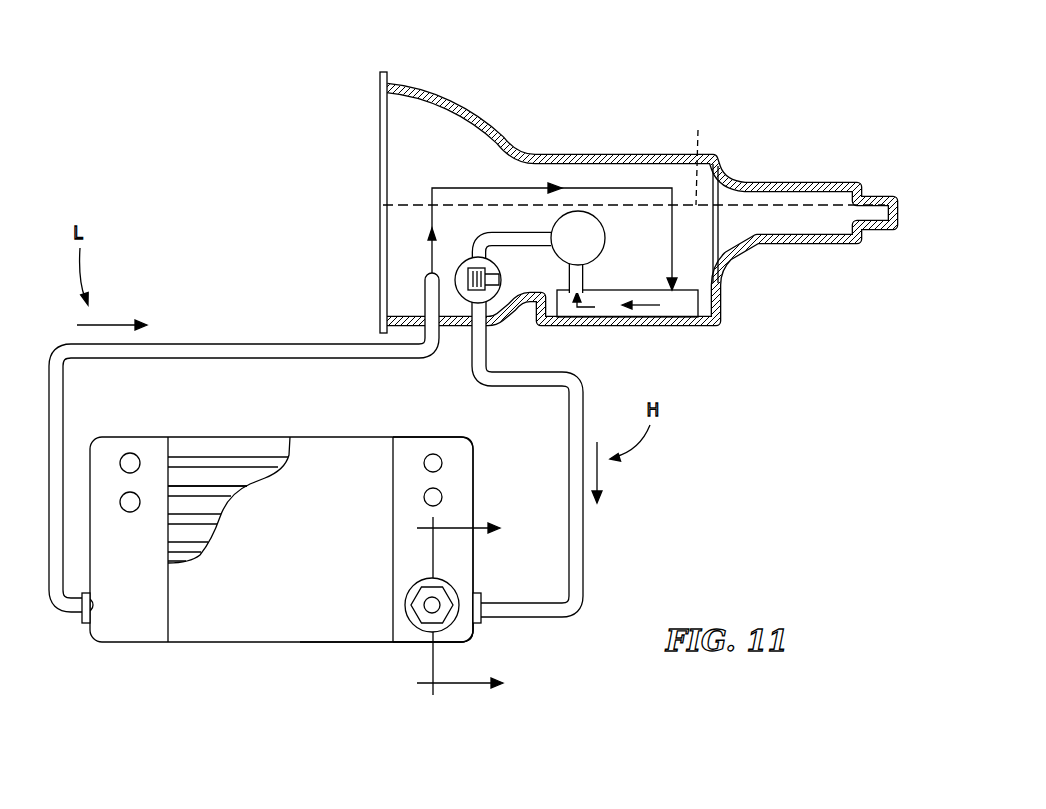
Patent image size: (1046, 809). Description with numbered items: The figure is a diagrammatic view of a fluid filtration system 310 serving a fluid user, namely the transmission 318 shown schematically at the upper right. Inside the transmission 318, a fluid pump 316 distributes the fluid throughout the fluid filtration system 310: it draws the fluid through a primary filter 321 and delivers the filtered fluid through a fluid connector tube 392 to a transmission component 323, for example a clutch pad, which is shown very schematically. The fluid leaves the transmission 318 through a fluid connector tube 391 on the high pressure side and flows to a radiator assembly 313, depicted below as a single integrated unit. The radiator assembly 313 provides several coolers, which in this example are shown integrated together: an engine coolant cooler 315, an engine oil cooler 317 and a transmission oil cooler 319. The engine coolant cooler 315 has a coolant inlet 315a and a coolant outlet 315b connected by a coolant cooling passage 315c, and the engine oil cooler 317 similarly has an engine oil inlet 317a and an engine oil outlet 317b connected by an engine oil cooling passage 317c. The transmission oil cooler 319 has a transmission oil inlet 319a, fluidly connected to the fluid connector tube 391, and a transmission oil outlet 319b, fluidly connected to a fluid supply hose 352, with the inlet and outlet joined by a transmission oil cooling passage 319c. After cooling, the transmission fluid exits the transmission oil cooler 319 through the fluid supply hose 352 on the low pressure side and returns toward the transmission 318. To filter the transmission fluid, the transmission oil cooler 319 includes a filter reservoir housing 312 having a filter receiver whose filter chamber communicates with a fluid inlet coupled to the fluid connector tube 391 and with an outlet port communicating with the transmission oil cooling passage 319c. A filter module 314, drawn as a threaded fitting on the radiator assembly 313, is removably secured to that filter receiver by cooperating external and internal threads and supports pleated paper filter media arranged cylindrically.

The fluid filtration system 310 is at (636, 191).
The transmission 318 is at (526, 152).
The fluid connector tube 392 is at (505, 237).
The fluid pump 316 is at (607, 246).
The primary filter 321 is at (690, 298).
The transmission component 323 is at (493, 298).
The fluid supply hose 352 is at (213, 344).
The fluid connector tube 391 is at (588, 553).
The radiator assembly 313 is at (308, 540).
The engine oil cooler 317 is at (148, 515).
The engine oil inlet 317a is at (130, 452).
The engine oil outlet 317b is at (130, 514).
The engine oil cooling passage 317c is at (214, 490).
The engine coolant cooler 315 is at (398, 502).
The coolant inlet 315a is at (422, 463).
The coolant outlet 315b is at (422, 497).
The coolant cooling passage 315c is at (250, 455).
The transmission oil cooler 319 is at (377, 636).
The transmission oil inlet 319a is at (483, 605).
The transmission oil outlet 319b is at (86, 626).
The transmission oil cooling passage 319c is at (187, 517).
The filter module 314 is at (405, 603).
The filter reservoir housing 312 is at (474, 638).